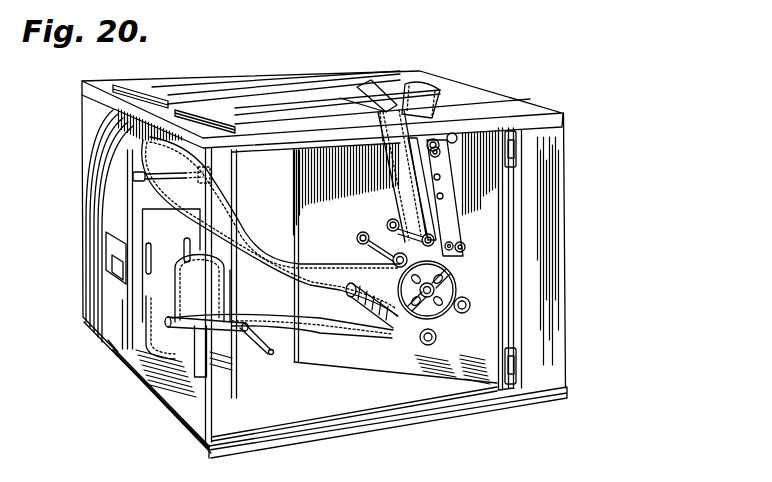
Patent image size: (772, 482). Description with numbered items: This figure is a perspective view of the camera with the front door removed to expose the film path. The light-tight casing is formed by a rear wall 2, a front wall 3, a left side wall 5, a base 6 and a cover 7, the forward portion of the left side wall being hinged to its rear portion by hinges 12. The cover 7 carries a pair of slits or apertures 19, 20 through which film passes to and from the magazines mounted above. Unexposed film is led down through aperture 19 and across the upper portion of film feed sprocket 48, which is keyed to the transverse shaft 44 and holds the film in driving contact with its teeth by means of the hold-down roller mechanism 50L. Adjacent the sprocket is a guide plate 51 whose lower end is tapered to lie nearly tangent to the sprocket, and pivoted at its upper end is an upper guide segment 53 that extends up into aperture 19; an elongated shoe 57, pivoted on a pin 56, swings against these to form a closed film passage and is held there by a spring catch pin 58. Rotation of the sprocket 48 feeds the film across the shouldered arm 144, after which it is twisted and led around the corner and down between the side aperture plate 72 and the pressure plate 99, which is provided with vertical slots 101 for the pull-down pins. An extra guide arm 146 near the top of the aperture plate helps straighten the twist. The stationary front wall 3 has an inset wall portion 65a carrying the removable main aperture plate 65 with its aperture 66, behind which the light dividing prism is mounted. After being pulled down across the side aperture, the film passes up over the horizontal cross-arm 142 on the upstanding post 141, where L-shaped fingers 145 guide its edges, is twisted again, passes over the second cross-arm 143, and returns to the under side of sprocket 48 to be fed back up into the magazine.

The rear wall 2 is at (566, 249).
The front wall 3 is at (90, 308).
The left side wall 5 is at (556, 342).
The base 6 is at (460, 408).
The cover 7 is at (517, 107).
The hinges 12 is at (518, 160).
The aperture 19 is at (433, 128).
The aperture 20 is at (386, 100).
The transverse shaft 44 is at (388, 336).
The film feed sprocket 48 is at (432, 318).
The hold-down roller mechanism 50L is at (373, 236).
The guide plate 51 is at (432, 214).
The upper guide segment 53 is at (420, 150).
The pin 56 is at (470, 130).
The shoe 57 is at (446, 206).
The spring catch pin 58 is at (464, 250).
The main aperture plate 65 is at (108, 243).
The inset wall portion 65a is at (133, 210).
The aperture 66 is at (118, 262).
The aperture plate 72 is at (133, 346).
The pressure plate 99 is at (138, 290).
The vertical slots 101 is at (148, 274).
The upstanding post 141 is at (199, 378).
The horizontal cross-arm 142 is at (172, 340).
The second cross-arm 143 is at (268, 355).
The arm 144 is at (303, 266).
The L-shaped fingers 145 is at (162, 328).
The extra guide arm 146 is at (136, 178).